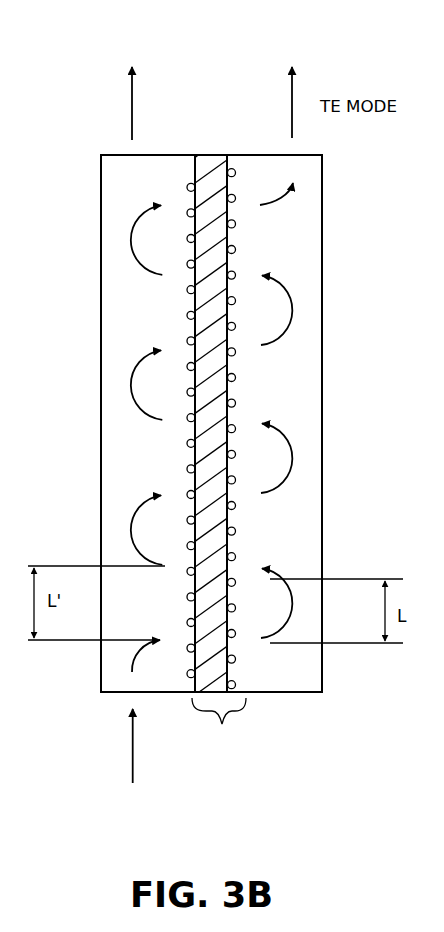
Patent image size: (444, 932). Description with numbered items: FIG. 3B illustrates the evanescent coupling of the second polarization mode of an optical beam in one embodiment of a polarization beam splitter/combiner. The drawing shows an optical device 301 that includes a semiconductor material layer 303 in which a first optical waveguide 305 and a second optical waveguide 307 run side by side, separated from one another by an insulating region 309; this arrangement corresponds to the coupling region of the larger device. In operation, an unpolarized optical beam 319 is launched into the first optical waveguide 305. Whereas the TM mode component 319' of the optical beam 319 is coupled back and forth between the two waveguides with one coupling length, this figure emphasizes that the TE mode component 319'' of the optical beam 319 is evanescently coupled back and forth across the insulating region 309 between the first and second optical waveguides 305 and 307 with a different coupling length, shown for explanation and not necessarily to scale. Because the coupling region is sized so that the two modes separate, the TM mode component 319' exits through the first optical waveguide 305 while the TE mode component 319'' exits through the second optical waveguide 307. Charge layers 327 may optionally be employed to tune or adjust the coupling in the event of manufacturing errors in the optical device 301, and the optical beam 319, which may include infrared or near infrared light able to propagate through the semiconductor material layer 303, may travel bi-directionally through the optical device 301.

The optical device 301 is at (322, 41).
The semiconductor material layer 303 is at (323, 172).
The first optical waveguide 305 is at (102, 413).
The second optical waveguide 307 is at (323, 415).
The insulating region 309 is at (213, 153).
The optical beam 319 is at (100, 746).
The TM mode component 319' is at (159, 103).
The TE mode component 319'' is at (258, 102).
The charge layers 327 is at (219, 724).